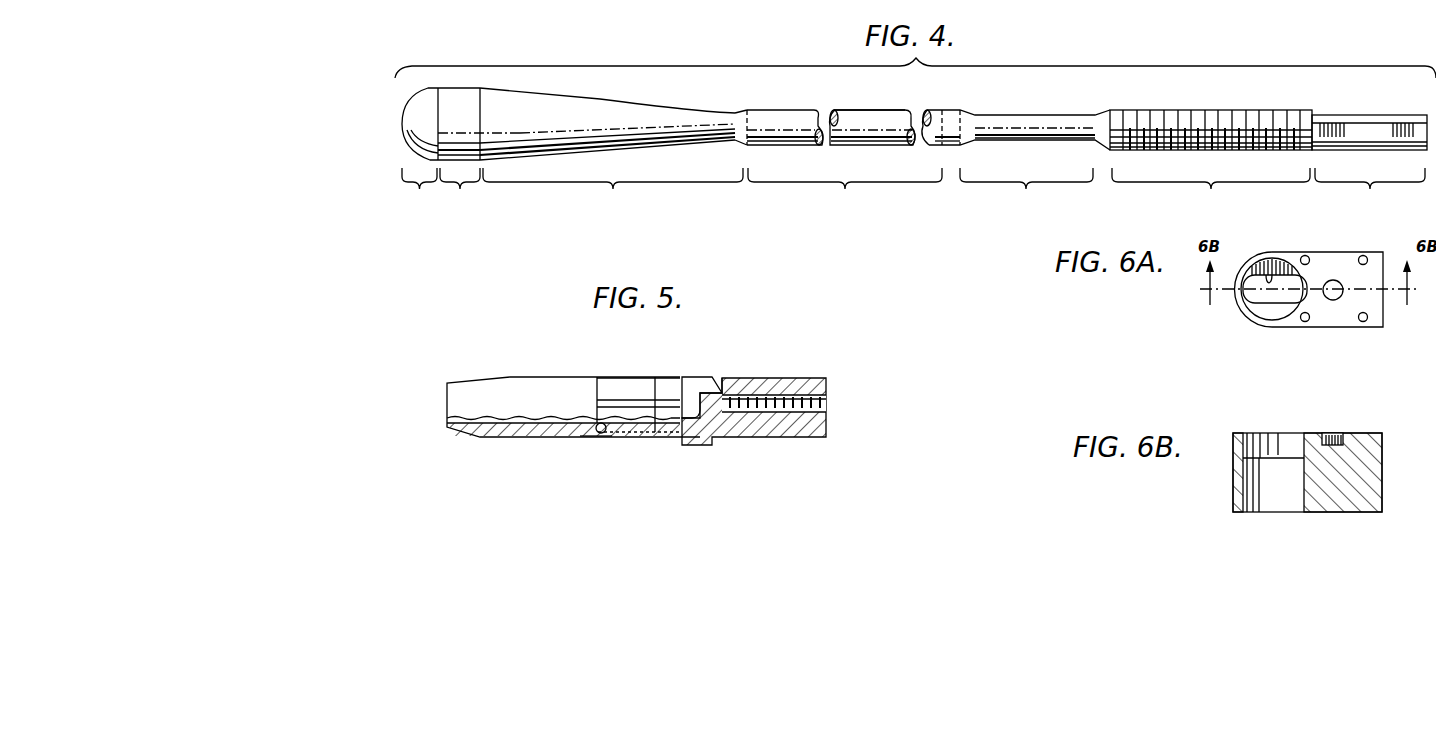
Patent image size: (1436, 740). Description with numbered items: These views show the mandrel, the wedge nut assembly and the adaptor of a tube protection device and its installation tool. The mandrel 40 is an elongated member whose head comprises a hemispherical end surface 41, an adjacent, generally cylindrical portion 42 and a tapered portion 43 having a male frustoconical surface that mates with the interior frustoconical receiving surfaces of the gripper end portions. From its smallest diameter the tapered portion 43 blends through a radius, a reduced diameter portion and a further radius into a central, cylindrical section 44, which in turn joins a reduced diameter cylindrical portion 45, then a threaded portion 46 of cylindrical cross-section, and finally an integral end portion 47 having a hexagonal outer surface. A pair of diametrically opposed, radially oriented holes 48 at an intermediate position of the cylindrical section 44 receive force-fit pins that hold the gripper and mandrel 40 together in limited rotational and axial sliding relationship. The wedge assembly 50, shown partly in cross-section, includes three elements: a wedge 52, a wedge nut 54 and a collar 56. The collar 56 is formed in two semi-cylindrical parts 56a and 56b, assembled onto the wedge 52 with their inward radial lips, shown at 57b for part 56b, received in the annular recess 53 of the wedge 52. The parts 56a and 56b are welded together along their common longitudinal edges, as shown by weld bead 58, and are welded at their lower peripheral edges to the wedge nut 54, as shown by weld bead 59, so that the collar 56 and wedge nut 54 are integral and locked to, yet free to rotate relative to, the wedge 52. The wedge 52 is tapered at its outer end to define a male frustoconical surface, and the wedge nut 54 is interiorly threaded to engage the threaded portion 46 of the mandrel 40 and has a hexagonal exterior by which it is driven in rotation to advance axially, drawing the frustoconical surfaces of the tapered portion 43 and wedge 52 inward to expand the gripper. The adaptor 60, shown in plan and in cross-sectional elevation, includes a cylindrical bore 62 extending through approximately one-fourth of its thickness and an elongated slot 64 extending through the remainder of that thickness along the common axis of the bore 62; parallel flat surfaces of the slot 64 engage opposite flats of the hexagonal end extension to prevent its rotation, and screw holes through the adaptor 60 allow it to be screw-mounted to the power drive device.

In FIG. 4, the mandrel 40 is at (454, 219).
In FIG. 4, the hemispherical end surface 41 is at (420, 148).
In FIG. 4, the generally cylindrical portion 42 is at (479, 148).
In FIG. 4, the tapered portion 43 is at (613, 149).
In FIG. 4, the central cylindrical section 44 is at (844, 161).
In FIG. 4, the reduced diameter cylindrical portion 45 is at (1016, 162).
In FIG. 4, the threaded portion 46 is at (1211, 164).
In FIG. 4, the end portion 47 is at (1369, 166).
In FIG. 4, the holes 48 is at (897, 112).
In FIG. 5, the wedge assembly 50 is at (476, 360).
In FIG. 5, the wedge 52 is at (557, 377).
In FIG. 5, the annular recess 53 is at (596, 431).
In FIG. 5, the wedge nut 54 is at (768, 378).
In FIG. 5, the collar 56 is at (637, 358).
In FIG. 5, the semi-cylindrical part 56a is at (612, 377).
In FIG. 5, the semi-cylindrical part 56b is at (636, 440).
In FIG. 5, the inward radial lip 57b is at (588, 440).
In FIG. 5, the weld bead 58 is at (656, 400).
In FIG. 5, the weld bead 59 is at (683, 390).
In FIG. 6A, the adaptor 60 is at (1235, 324).
In FIG. 6B, the adaptor 60 is at (1376, 418).
In FIG. 6A, the cylindrical bore 62 is at (1284, 268).
In FIG. 6B, the cylindrical bore 62 is at (1272, 445).
In FIG. 6A, the elongated slot 64 is at (1268, 270).
In FIG. 6B, the elongated slot 64 is at (1258, 487).